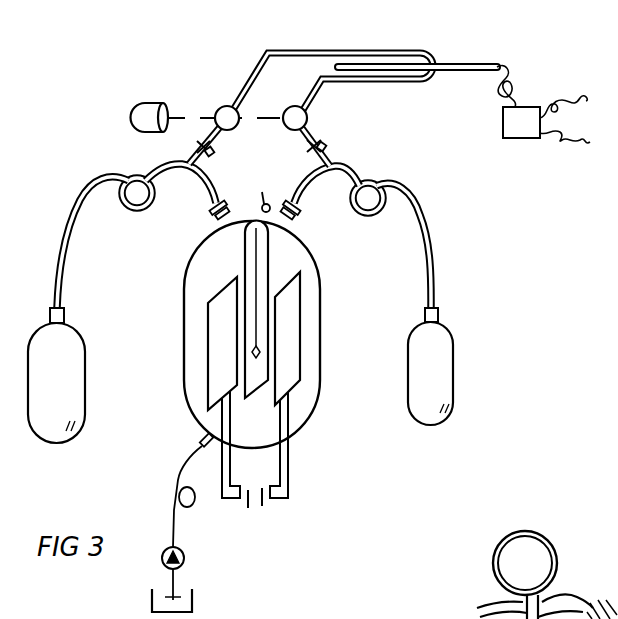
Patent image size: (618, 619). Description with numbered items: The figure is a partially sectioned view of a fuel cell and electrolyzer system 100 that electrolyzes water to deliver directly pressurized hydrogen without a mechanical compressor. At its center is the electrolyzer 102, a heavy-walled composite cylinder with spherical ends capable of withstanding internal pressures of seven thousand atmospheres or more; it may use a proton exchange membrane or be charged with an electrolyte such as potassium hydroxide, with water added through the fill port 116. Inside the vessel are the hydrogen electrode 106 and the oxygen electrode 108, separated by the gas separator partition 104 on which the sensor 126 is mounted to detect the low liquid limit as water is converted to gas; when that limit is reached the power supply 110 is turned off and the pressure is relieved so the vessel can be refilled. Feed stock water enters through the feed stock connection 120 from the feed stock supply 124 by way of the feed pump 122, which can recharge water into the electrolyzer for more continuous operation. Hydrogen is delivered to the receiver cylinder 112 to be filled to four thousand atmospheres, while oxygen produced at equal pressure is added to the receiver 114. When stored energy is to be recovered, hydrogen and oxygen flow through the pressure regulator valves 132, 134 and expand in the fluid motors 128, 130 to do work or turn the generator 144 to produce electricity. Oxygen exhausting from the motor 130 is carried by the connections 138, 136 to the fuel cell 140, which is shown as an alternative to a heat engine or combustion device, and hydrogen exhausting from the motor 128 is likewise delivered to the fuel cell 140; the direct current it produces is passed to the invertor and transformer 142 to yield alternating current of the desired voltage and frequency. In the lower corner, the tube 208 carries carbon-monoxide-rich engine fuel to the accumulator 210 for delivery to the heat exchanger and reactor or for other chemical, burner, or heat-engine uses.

The fuel cell and electrolyzer system 100 is at (173, 40).
The electrolyzer 102 is at (198, 282).
The gas separator partition 104 is at (272, 267).
The hydrogen electrode 106 is at (215, 348).
The oxygen electrode 108 is at (293, 318).
The power supply 110 is at (265, 498).
The receiver cylinder 112 is at (456, 368).
The receiver 114 is at (76, 397).
The fill port 116 is at (250, 219).
The feed stock connection 120 is at (200, 438).
The feed pump 122 is at (185, 549).
The feed stock supply 124 is at (196, 594).
The sensor 126 is at (279, 177).
The fluid motor 128 is at (307, 112).
The fluid motor 130 is at (218, 108).
The pressure regulator valve 132 is at (199, 146).
The pressure regulator valve 134 is at (302, 146).
The connection 136 is at (337, 50).
The connection 138 is at (400, 84).
The fuel cell 140 is at (447, 62).
The invertor and transformer 142 is at (517, 143).
The generator 144 is at (125, 113).
The tube 208 is at (577, 597).
The accumulator 210 is at (541, 541).